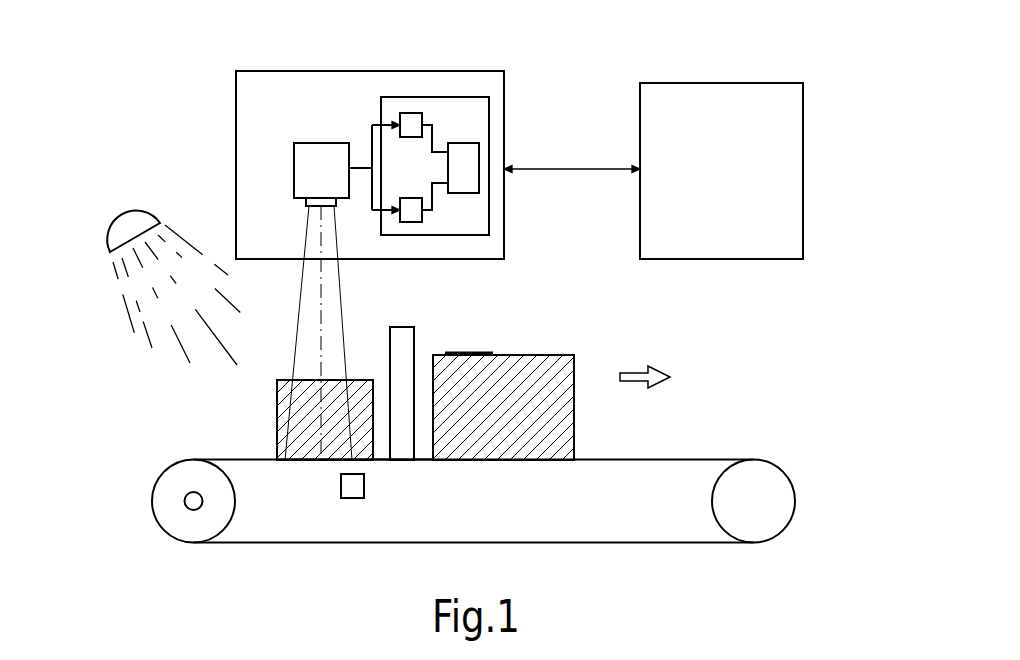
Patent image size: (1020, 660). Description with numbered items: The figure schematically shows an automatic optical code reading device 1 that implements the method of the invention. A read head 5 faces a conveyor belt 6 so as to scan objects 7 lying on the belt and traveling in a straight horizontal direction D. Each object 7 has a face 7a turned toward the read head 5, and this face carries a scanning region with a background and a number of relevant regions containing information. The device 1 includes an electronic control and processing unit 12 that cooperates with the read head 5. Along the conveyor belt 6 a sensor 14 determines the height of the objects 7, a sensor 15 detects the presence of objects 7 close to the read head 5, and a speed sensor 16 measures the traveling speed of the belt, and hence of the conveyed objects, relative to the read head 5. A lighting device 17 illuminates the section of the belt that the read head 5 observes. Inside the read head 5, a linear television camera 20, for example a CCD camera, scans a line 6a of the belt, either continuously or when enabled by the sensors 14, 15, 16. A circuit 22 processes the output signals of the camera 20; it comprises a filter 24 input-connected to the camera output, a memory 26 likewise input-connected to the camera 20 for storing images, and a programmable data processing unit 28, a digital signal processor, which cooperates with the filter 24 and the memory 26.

The automatic optical code reading device 1 is at (141, 76).
The read head 5 is at (390, 72).
The conveyor belt 6 is at (697, 461).
The line of the belt 6a is at (320, 460).
The objects 7 is at (300, 438).
The face 7a is at (307, 379).
The electronic control and processing unit 12 is at (792, 240).
The sensor 14 is at (392, 327).
The sensor 15 is at (358, 498).
The speed sensor 16 is at (185, 506).
The lighting device 17 is at (128, 224).
The linear television camera 20 is at (305, 194).
The circuit 22 is at (487, 97).
The filter 24 is at (410, 213).
The memory 26 is at (411, 122).
The programmable data processing unit 28 is at (470, 173).
The direction D is at (633, 382).